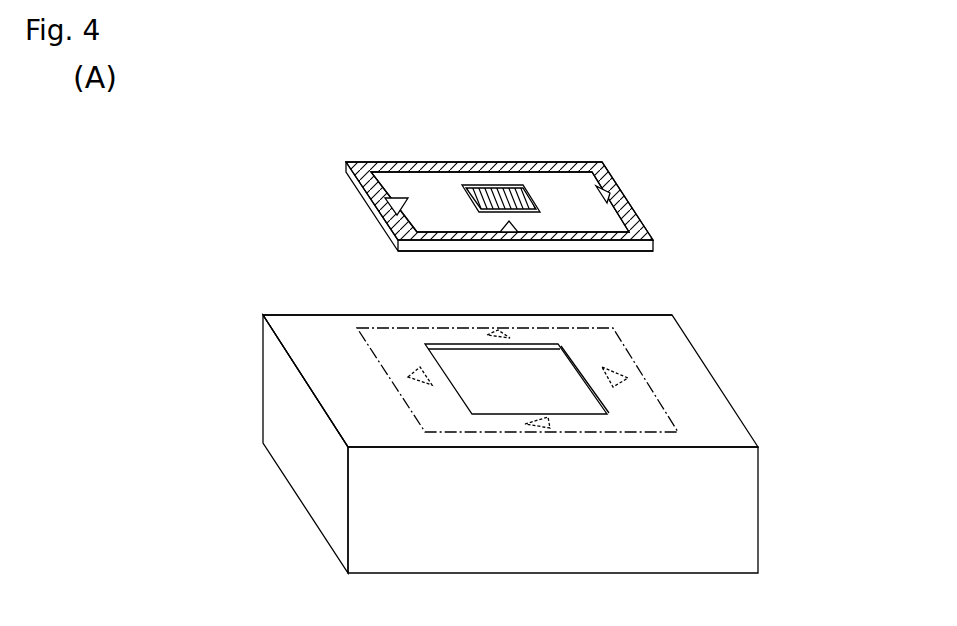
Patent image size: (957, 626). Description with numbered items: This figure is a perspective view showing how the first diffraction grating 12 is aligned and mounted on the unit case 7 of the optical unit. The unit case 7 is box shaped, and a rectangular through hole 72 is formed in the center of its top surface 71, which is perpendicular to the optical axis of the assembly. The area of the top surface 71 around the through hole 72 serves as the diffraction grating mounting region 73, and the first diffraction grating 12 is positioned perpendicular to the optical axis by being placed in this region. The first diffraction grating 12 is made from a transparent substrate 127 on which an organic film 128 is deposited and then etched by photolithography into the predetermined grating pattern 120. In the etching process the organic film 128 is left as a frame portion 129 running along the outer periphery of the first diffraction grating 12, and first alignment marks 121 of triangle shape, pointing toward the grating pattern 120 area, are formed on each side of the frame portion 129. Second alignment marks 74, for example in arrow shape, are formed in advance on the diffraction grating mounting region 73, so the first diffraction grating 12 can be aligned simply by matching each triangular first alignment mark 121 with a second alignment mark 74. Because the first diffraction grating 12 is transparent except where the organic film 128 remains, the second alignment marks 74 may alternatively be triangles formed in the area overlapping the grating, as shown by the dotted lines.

The unit case 7 is at (636, 541).
The first diffraction grating 12 is at (643, 193).
The top surface 71 is at (698, 400).
The through hole 72 is at (565, 393).
The diffraction grating mounting region 73 is at (400, 395).
The second alignment marks 74 is at (328, 377).
The grating pattern 120 is at (487, 182).
The first alignment marks 121 is at (508, 223).
The transparent substrate 127 is at (645, 247).
The organic film 128 is at (693, 107).
The frame portion 129 is at (593, 163).